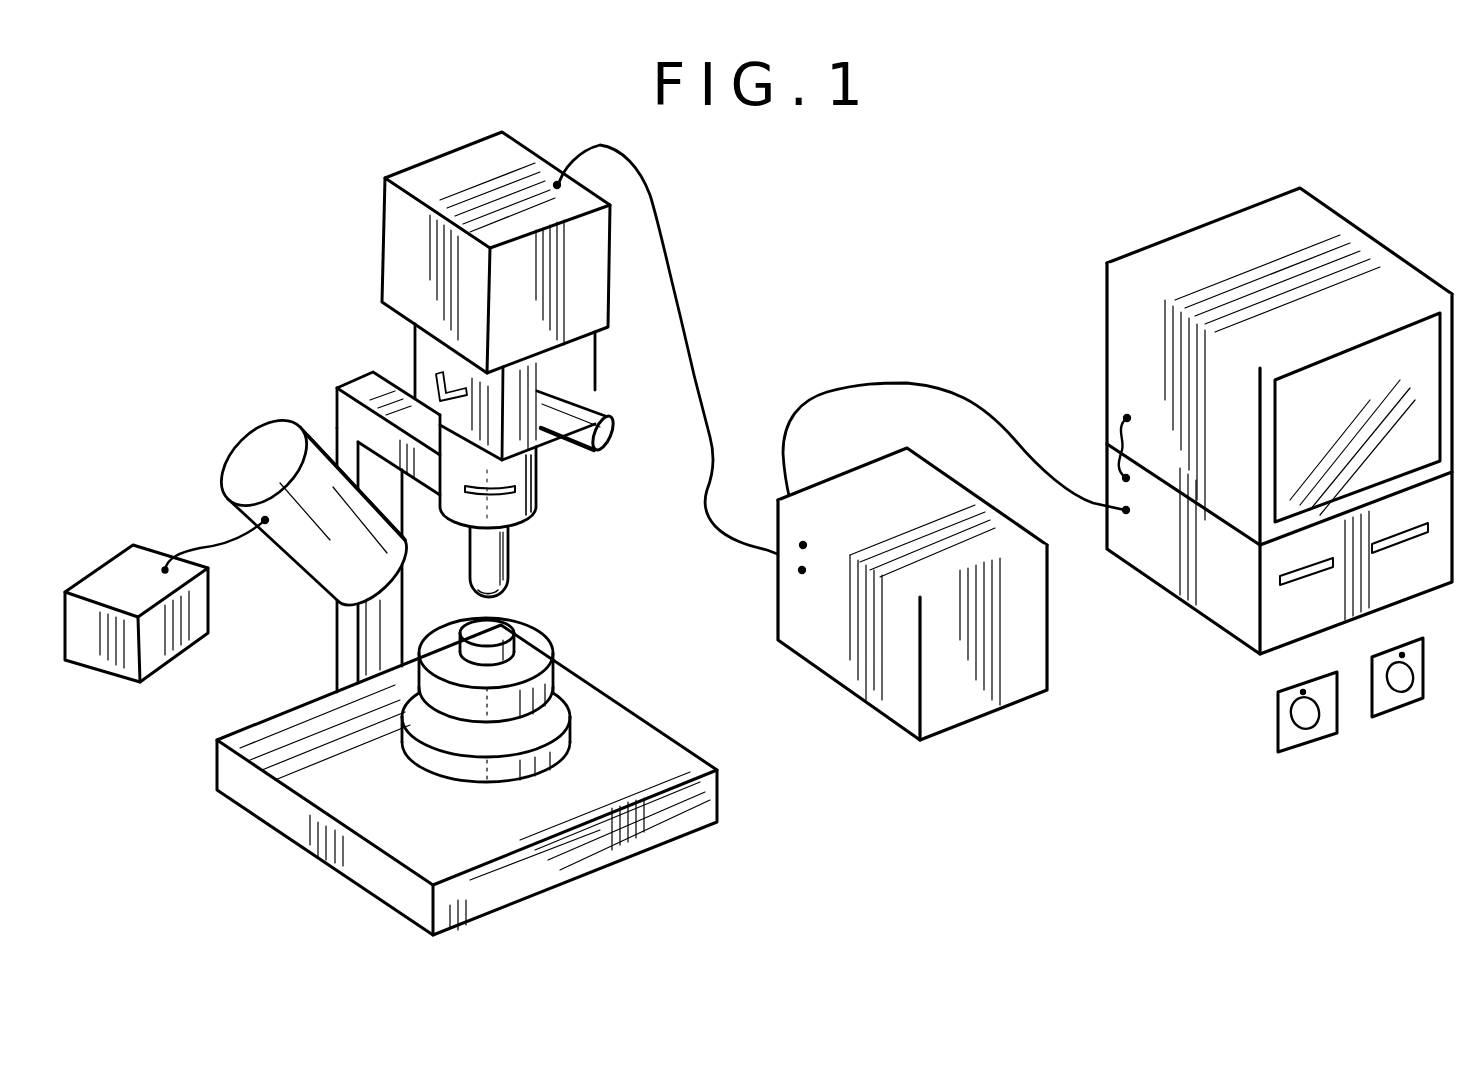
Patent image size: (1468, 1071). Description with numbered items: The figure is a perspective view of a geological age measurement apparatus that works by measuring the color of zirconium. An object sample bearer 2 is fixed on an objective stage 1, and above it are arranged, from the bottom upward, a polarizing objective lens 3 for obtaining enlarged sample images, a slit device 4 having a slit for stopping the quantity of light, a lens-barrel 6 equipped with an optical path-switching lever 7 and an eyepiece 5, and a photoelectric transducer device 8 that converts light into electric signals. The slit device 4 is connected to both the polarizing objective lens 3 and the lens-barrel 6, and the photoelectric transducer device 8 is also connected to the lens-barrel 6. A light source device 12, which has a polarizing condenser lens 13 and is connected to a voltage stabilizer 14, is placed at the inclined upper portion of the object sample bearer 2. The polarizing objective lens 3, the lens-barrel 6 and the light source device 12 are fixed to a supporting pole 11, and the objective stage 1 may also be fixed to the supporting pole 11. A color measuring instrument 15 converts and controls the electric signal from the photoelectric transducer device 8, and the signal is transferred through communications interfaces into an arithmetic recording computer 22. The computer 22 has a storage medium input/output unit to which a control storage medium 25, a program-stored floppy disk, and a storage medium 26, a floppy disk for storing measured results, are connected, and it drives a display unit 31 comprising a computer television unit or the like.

The objective stage 1 is at (597, 693).
The object sample bearer 2 is at (500, 630).
The polarizing objective lens 3 is at (508, 562).
The slit device 4 is at (537, 495).
The eyepiece 5 is at (613, 430).
The lens-barrel 6 is at (587, 357).
The optical path-switching lever 7 is at (433, 387).
The photoelectric transducer device 8 is at (390, 243).
The supporting pole 11 is at (360, 388).
The light source device 12 is at (245, 462).
The polarizing condenser lens 13 is at (387, 597).
The voltage stabilizer 14 is at (108, 577).
The color measuring instrument 15 is at (860, 673).
The arithmetic recording computer 22 is at (1210, 600).
The control storage medium 25 is at (1318, 733).
The storage medium 26 is at (1410, 700).
The display unit 31 is at (1157, 248).